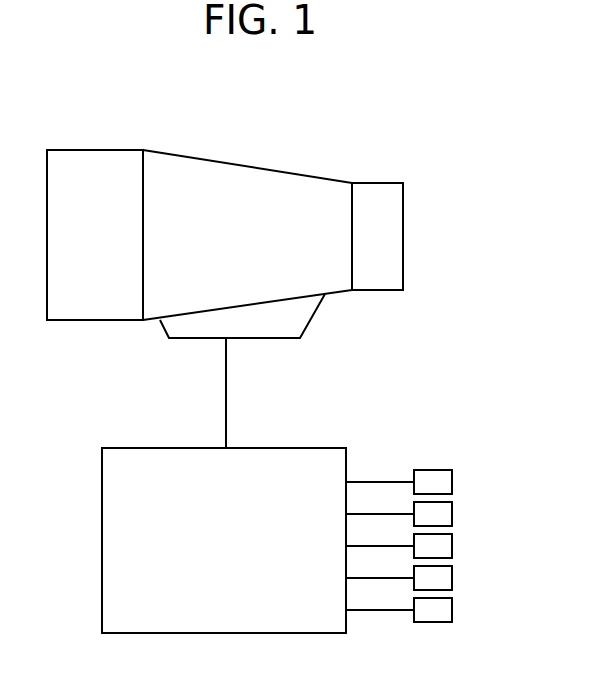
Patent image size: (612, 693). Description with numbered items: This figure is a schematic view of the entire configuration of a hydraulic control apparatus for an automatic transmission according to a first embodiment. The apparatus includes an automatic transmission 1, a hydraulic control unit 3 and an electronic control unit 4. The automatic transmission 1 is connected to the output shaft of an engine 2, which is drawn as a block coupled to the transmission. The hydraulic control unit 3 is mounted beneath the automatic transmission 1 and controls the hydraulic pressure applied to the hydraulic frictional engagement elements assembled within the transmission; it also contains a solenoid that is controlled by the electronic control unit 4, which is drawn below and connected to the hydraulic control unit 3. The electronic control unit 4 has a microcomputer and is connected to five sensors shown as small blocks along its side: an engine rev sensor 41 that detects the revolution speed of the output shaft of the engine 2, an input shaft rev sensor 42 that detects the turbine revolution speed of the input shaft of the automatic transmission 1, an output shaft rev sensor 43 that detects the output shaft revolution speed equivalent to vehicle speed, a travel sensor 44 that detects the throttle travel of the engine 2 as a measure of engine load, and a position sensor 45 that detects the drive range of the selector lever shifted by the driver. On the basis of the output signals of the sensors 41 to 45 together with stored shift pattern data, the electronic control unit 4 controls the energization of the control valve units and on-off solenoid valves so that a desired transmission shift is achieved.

The automatic transmission 1 is at (253, 172).
The engine 2 is at (94, 157).
The hydraulic control unit 3 is at (283, 327).
The electronic control unit 4 is at (108, 479).
The engine rev sensor 41 is at (452, 482).
The input shaft rev sensor 42 is at (452, 514).
The output shaft rev sensor 43 is at (452, 546).
The travel sensor 44 is at (452, 578).
The position sensor 45 is at (452, 610).